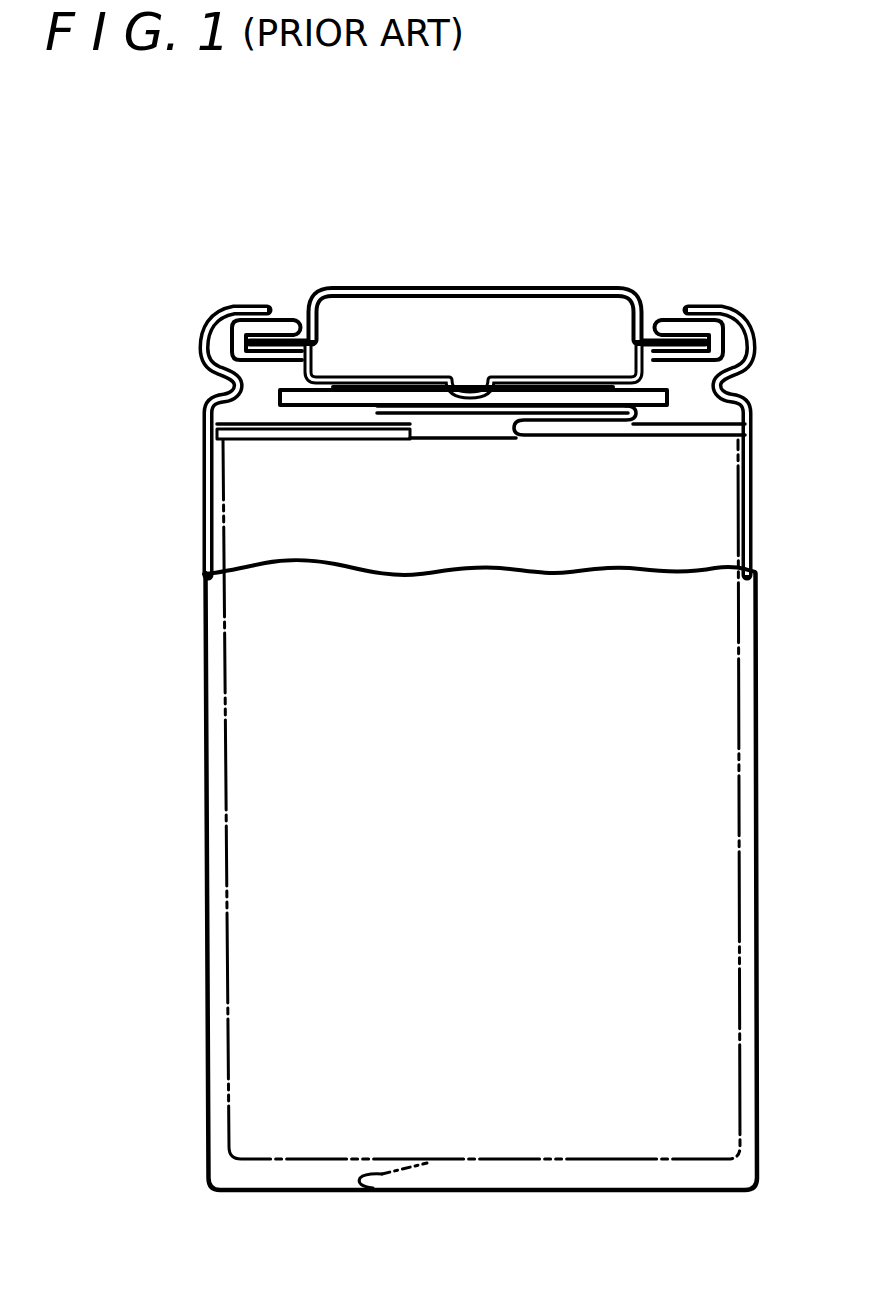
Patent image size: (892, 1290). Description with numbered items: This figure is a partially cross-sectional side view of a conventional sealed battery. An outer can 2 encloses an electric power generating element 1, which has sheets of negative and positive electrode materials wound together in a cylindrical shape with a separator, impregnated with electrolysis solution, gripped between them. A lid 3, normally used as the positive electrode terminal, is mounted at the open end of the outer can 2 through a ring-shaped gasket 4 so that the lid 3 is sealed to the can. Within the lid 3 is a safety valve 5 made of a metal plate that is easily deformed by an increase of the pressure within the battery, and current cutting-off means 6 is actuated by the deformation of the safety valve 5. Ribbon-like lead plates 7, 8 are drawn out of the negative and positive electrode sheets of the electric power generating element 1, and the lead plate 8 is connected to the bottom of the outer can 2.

The electric power generating element 1 is at (717, 790).
The outer can 2 is at (757, 851).
The lid 3 is at (568, 288).
The ring-shaped gasket 4 is at (246, 330).
The safety valve 5 is at (440, 380).
The current cutting-off means 6 is at (460, 412).
The lead plate 7 is at (634, 423).
The lead plate 8 is at (427, 1163).